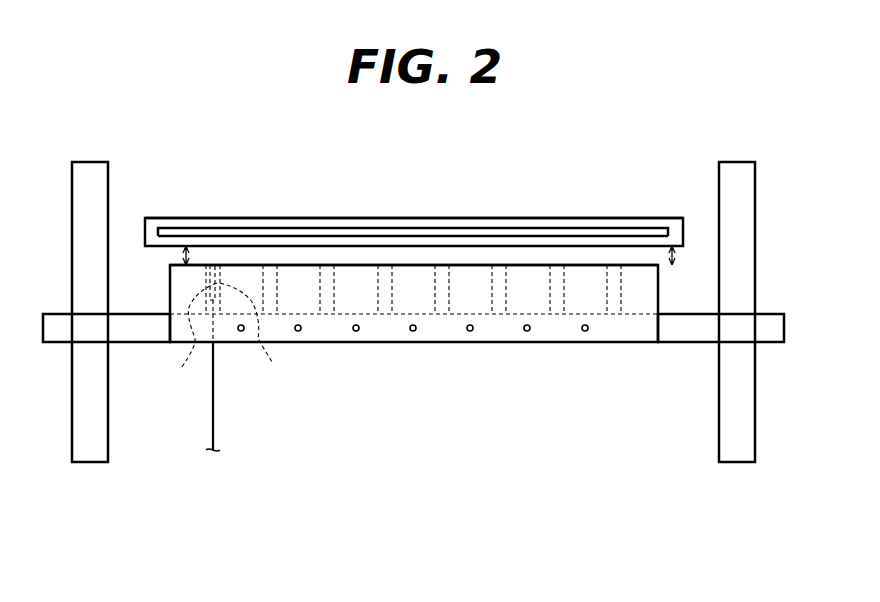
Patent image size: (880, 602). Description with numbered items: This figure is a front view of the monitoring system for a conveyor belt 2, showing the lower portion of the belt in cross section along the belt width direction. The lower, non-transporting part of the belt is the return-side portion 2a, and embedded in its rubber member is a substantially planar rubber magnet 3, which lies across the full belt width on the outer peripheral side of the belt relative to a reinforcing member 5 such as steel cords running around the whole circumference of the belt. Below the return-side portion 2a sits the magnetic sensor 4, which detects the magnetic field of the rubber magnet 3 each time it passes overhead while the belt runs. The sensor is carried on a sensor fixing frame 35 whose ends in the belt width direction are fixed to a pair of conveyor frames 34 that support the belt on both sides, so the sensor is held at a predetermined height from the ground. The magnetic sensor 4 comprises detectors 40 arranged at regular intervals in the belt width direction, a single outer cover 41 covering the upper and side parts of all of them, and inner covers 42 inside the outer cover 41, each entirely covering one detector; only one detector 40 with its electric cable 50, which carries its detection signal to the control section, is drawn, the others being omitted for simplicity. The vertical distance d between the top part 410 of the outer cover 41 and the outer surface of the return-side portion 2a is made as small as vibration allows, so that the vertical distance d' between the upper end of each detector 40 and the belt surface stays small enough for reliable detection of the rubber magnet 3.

The conveyor belt 2 is at (290, 216).
The return-side portion 2a is at (447, 218).
The rubber magnet 3 is at (235, 236).
The magnetic sensor 4 is at (446, 360).
The reinforcing member 5 is at (353, 233).
The conveyor frame 34 is at (88, 172).
The sensor fixing frame 35 is at (686, 328).
The detector 40 is at (212, 336).
The outer cover 41 is at (170, 292).
The inner cover 42 is at (253, 325).
The electric cable 50 is at (214, 395).
The top part 410 is at (580, 265).
The vertical distance d is at (691, 255).
The vertical distance d' is at (160, 259).